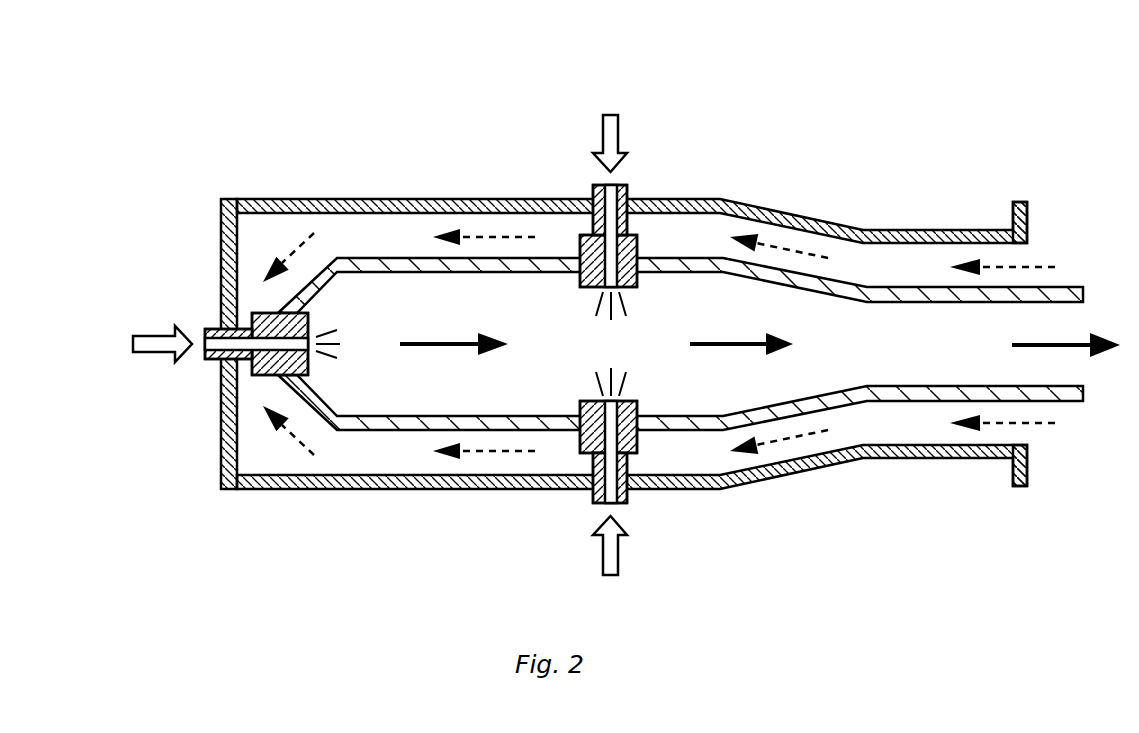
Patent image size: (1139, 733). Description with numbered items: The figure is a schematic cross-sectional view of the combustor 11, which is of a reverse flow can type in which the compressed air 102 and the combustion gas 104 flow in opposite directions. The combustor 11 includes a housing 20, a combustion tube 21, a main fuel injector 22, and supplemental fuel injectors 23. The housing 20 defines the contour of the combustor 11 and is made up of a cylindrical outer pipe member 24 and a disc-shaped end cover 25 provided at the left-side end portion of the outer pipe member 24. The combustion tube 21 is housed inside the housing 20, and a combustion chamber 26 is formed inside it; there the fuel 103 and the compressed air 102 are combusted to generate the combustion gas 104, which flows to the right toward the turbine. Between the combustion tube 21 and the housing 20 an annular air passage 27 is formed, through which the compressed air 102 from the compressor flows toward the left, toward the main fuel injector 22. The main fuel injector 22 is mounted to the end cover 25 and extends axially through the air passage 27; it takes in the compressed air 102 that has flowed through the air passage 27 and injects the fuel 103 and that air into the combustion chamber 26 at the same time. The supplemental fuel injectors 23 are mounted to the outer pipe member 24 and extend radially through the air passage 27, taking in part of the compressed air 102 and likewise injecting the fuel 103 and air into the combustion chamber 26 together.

The combustor 11 is at (933, 112).
The housing 20 is at (947, 230).
The combustion tube 21 is at (886, 287).
The main fuel injector 22 is at (215, 359).
The supplemental fuel injector 23 is at (595, 185).
The outer pipe member 24 is at (408, 200).
The end cover 25 is at (221, 246).
The combustion chamber 26 is at (567, 350).
The air passage 27 is at (345, 230).
The compressed air 102 is at (785, 245).
The fuel 103 is at (349, 345).
The combustion gas 104 is at (905, 336).